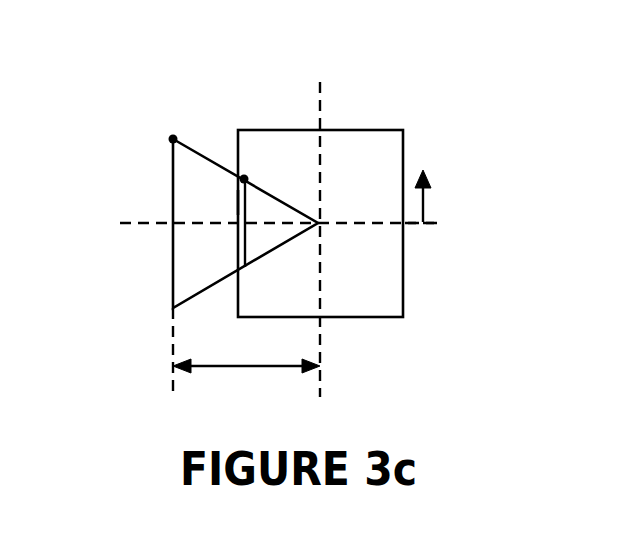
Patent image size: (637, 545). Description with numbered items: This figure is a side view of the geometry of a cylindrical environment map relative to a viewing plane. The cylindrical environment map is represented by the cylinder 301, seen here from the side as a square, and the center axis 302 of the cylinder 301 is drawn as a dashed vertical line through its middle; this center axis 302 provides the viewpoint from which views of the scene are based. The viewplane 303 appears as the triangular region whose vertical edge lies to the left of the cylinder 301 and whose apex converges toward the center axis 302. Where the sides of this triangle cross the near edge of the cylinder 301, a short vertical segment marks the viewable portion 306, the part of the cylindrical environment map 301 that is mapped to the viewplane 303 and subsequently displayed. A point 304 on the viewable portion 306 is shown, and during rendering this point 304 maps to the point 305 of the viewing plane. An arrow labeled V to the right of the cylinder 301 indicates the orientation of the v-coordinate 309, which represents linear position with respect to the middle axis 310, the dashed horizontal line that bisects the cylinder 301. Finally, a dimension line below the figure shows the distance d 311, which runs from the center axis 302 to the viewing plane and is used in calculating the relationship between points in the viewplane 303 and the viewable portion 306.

The cylinder 301 is at (408, 131).
The center axis 302 is at (321, 110).
The viewplane 303 is at (172, 268).
The point 304 is at (243, 178).
The point 305 is at (173, 139).
The viewable portion 306 is at (237, 202).
The v-coordinate 309 is at (423, 205).
The middle axis 310 is at (440, 225).
The distance d 311 is at (260, 368).